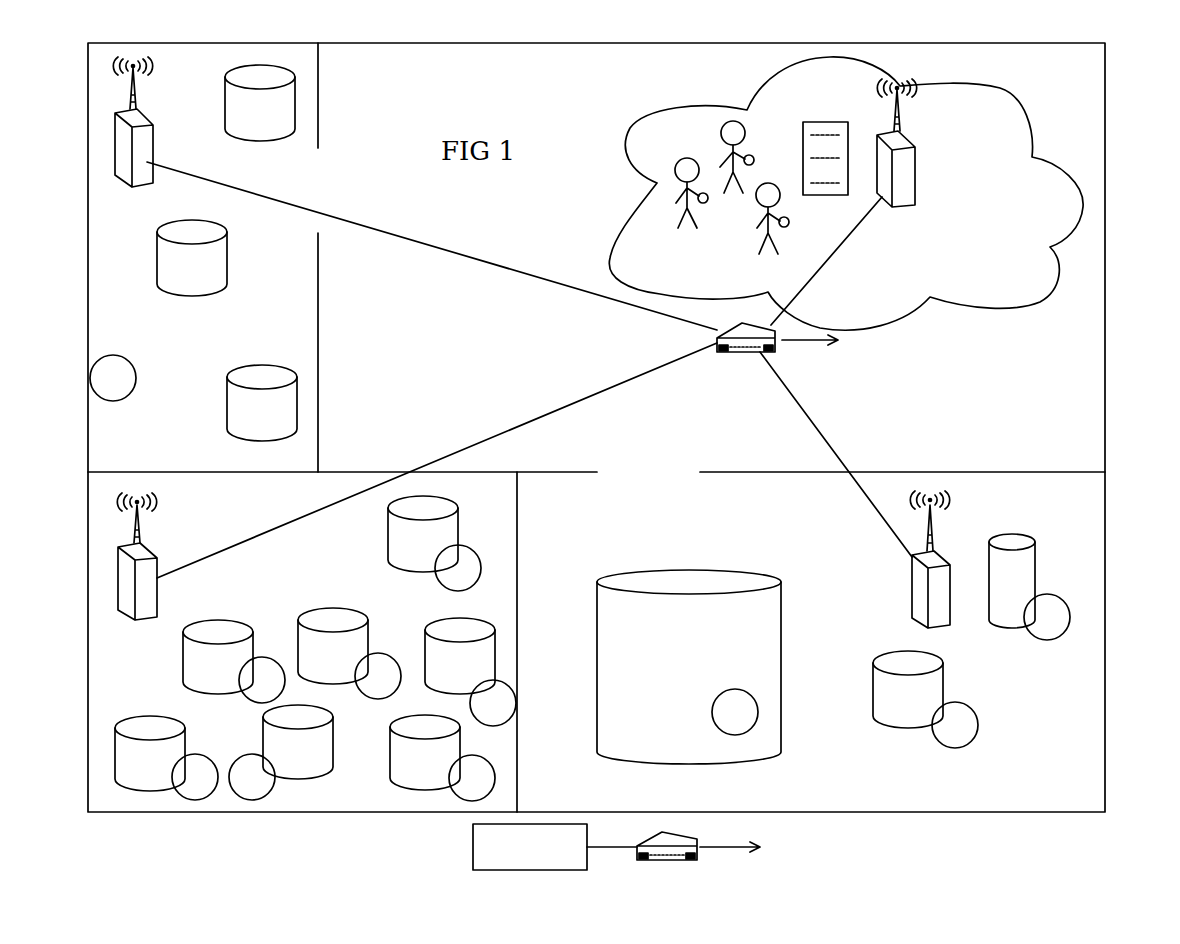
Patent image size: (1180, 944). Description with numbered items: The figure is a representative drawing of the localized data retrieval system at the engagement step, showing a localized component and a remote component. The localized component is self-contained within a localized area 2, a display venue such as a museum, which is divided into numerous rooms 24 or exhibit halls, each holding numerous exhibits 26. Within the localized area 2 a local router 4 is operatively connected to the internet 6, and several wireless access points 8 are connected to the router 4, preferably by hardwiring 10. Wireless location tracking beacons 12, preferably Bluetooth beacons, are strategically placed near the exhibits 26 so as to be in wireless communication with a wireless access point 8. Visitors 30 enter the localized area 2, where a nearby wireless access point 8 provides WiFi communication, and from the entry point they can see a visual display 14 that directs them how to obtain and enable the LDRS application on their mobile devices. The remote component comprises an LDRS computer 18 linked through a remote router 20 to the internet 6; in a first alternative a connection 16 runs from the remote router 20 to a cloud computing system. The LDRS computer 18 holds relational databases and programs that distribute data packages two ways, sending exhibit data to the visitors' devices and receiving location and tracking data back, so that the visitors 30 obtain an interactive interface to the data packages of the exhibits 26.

The localized area 2 is at (1105, 740).
The local router 4 is at (740, 352).
The internet 6 is at (940, 347).
The wireless access point 8 is at (153, 141).
The hardwiring 10 is at (572, 405).
The wireless location tracking beacon 12 is at (125, 388).
The visual display 14 is at (825, 121).
The connection 16 is at (617, 848).
The LDRS computer 18 is at (473, 846).
The remote router 20 is at (688, 836).
The rooms 24 is at (318, 300).
The exhibits 26 is at (218, 272).
The visitors 30 is at (758, 205).